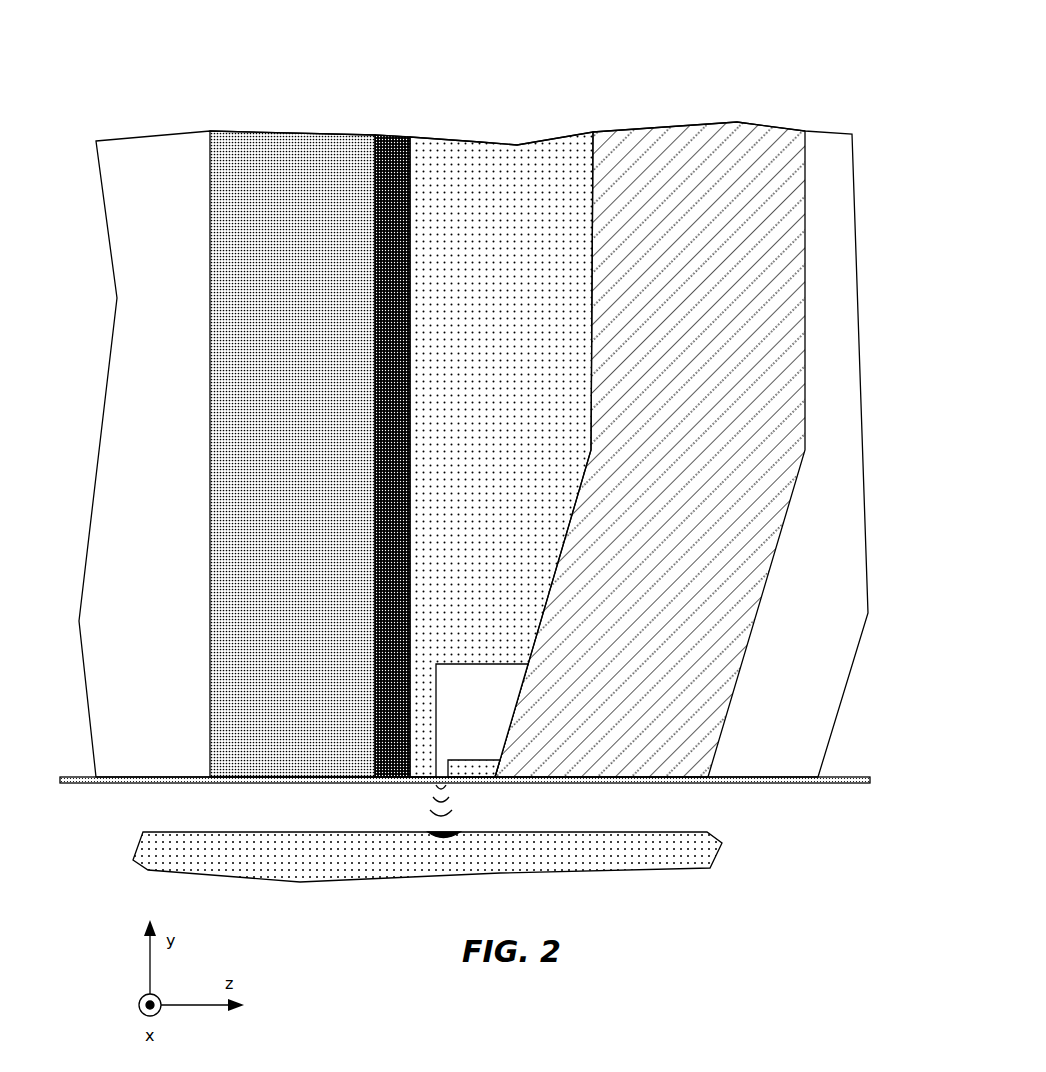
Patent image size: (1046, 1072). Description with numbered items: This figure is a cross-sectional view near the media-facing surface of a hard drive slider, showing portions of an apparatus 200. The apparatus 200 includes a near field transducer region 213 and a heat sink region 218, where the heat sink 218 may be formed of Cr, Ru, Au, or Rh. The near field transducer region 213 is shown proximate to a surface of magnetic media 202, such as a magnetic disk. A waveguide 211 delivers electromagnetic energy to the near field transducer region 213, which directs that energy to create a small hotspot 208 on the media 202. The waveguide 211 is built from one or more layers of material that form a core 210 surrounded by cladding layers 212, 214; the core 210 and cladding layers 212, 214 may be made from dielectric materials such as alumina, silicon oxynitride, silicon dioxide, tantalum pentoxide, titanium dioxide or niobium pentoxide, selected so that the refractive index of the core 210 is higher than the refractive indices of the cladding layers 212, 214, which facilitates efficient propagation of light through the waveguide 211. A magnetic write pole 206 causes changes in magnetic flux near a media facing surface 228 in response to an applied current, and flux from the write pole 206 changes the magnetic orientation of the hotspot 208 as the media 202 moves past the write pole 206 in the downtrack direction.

The apparatus 200 is at (136, 66).
The magnetic media 202 is at (202, 855).
The magnetic write pole 206 is at (714, 122).
The hotspot 208 is at (443, 837).
The core 210 is at (397, 137).
The waveguide 211 is at (401, 416).
The cladding layer 212 is at (501, 437).
The near field transducer region 213 is at (440, 758).
The cladding layer 214 is at (306, 136).
The heat sink region 218 is at (490, 735).
The media facing surface 228 is at (765, 782).